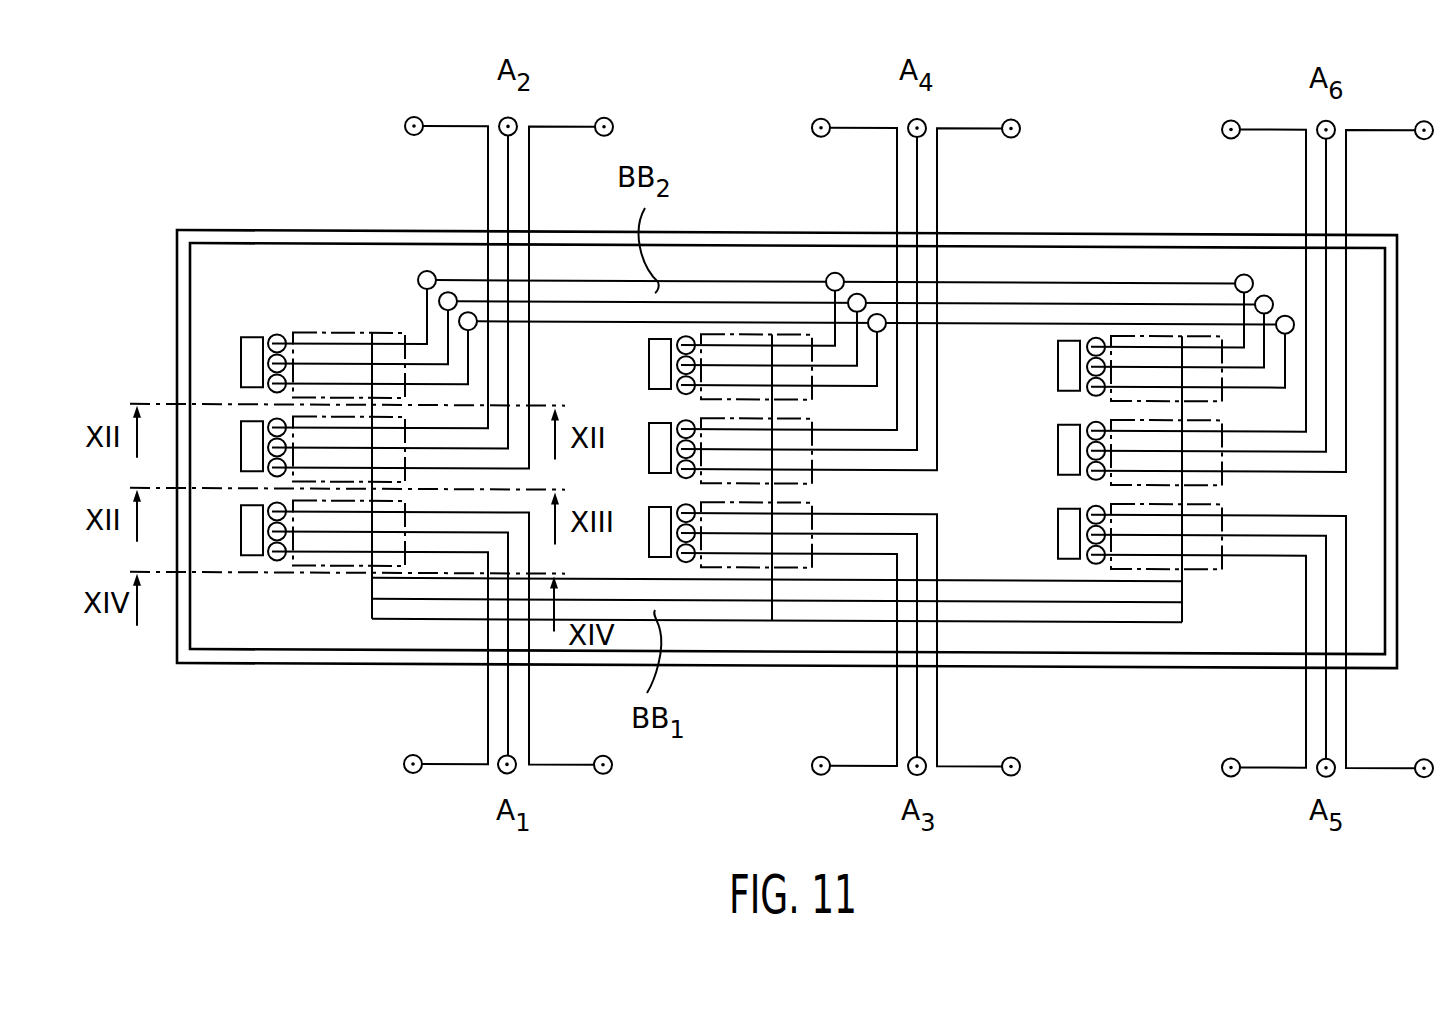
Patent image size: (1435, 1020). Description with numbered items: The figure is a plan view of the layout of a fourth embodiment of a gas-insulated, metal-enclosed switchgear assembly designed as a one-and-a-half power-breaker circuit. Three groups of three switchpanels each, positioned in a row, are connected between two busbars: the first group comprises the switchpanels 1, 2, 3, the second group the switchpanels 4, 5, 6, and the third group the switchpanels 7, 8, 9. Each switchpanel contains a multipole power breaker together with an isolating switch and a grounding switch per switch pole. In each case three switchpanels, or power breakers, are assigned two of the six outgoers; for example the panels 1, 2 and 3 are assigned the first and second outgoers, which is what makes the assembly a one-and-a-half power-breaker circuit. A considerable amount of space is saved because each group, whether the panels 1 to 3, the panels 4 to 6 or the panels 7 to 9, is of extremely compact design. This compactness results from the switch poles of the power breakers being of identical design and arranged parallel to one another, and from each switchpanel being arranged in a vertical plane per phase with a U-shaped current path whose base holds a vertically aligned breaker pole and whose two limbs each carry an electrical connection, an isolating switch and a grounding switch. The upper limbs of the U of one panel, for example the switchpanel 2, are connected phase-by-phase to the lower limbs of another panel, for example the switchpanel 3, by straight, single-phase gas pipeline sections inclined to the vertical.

The switchpanel 1 is at (313, 555).
The switchpanel 2 is at (347, 422).
The switchpanel 3 is at (305, 338).
The switchpanel 4 is at (807, 507).
The switchpanel 5 is at (812, 423).
The switchpanel 6 is at (766, 336).
The switchpanel 7 is at (1205, 562).
The switchpanel 8 is at (1205, 463).
The switchpanel 9 is at (1140, 353).